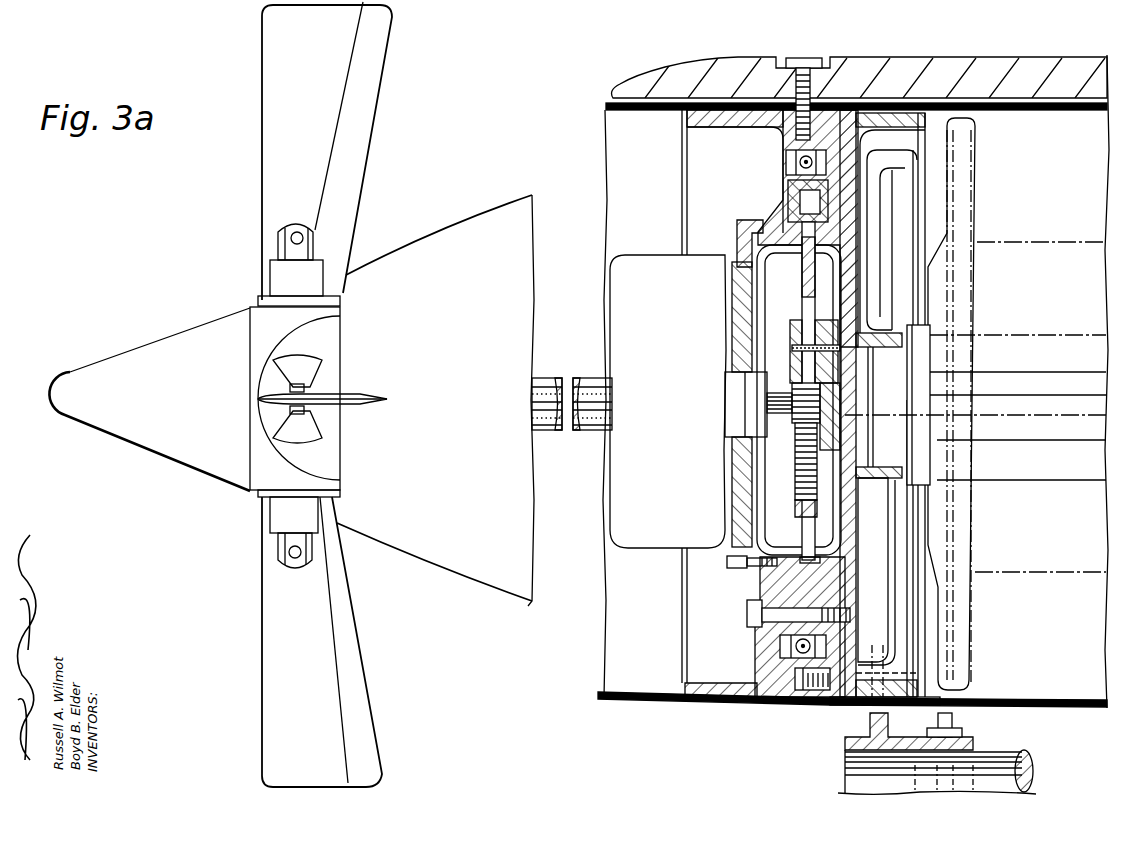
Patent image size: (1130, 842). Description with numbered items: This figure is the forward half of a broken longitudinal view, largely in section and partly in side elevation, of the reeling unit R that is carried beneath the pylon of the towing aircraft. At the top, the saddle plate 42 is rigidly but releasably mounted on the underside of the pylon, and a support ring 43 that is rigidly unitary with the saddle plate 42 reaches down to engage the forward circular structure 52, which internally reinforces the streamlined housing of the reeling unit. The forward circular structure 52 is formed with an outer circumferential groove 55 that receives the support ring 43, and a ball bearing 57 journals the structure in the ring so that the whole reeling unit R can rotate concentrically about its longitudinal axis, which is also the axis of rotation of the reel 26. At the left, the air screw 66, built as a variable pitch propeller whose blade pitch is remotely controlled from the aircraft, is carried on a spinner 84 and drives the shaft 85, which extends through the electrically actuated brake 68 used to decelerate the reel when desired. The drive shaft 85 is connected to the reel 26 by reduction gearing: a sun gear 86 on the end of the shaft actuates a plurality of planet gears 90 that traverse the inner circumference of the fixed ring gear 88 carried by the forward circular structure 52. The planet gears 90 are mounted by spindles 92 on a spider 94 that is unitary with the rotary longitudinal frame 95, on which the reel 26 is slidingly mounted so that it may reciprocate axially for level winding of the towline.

The reeling unit R is at (634, 69).
The saddle plate 42 is at (935, 68).
The support ring 43 is at (788, 134).
The ball bearing 57 is at (798, 163).
The reel 26 is at (1003, 241).
The rotary longitudinal frame 95 is at (1000, 336).
The fixed ring gear 88 is at (795, 304).
The planet gear 90 is at (798, 338).
The spindle 92 is at (800, 348).
The spider 94 is at (833, 318).
The sun gear 86 is at (790, 430).
The electrically actuated brake 68 is at (682, 372).
The drive shaft 85 is at (590, 377).
The spinner cone 84 is at (187, 447).
The air screw 66 is at (262, 229).
The forward circular structure 52 is at (752, 704).
The outer circumferential groove 55 is at (770, 680).